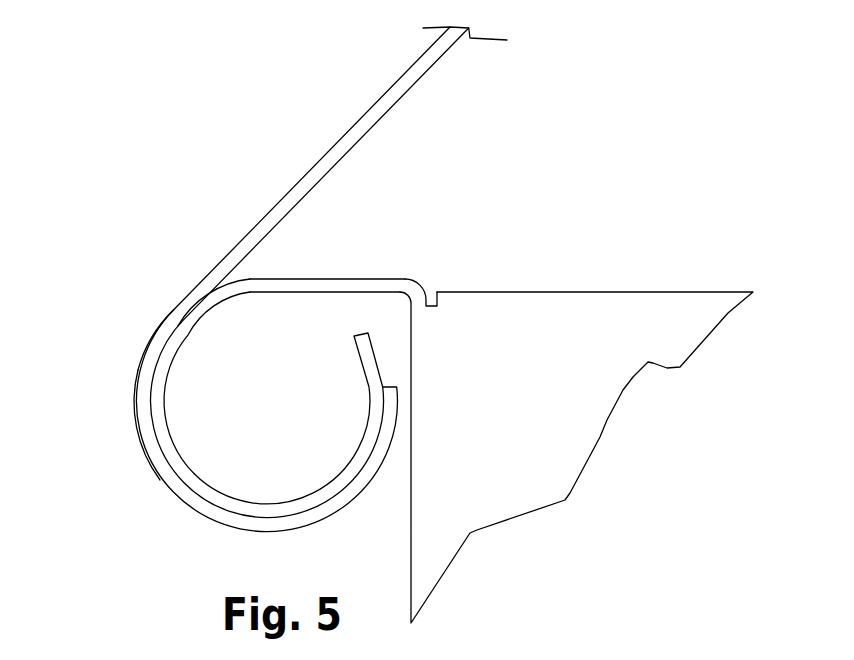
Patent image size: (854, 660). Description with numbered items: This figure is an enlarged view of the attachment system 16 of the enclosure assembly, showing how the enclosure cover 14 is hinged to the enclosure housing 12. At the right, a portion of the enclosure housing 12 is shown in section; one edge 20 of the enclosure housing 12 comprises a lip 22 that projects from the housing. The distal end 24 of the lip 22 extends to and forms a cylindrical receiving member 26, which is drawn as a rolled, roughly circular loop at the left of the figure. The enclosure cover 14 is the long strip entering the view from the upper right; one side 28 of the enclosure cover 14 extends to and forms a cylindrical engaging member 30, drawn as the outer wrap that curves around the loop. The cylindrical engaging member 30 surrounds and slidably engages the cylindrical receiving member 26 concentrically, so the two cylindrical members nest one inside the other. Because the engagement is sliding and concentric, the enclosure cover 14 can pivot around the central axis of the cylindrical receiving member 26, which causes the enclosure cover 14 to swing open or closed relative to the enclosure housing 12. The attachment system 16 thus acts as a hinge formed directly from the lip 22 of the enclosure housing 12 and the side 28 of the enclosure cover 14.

The enclosure housing 12 is at (585, 382).
The enclosure cover 14 is at (316, 163).
The attachment system 16 is at (203, 372).
The edge 20 is at (446, 292).
The lip 22 is at (305, 279).
The distal end 24 is at (270, 293).
The cylindrical receiving member 26 is at (280, 504).
The side 28 is at (176, 308).
The cylindrical engaging member 30 is at (140, 424).